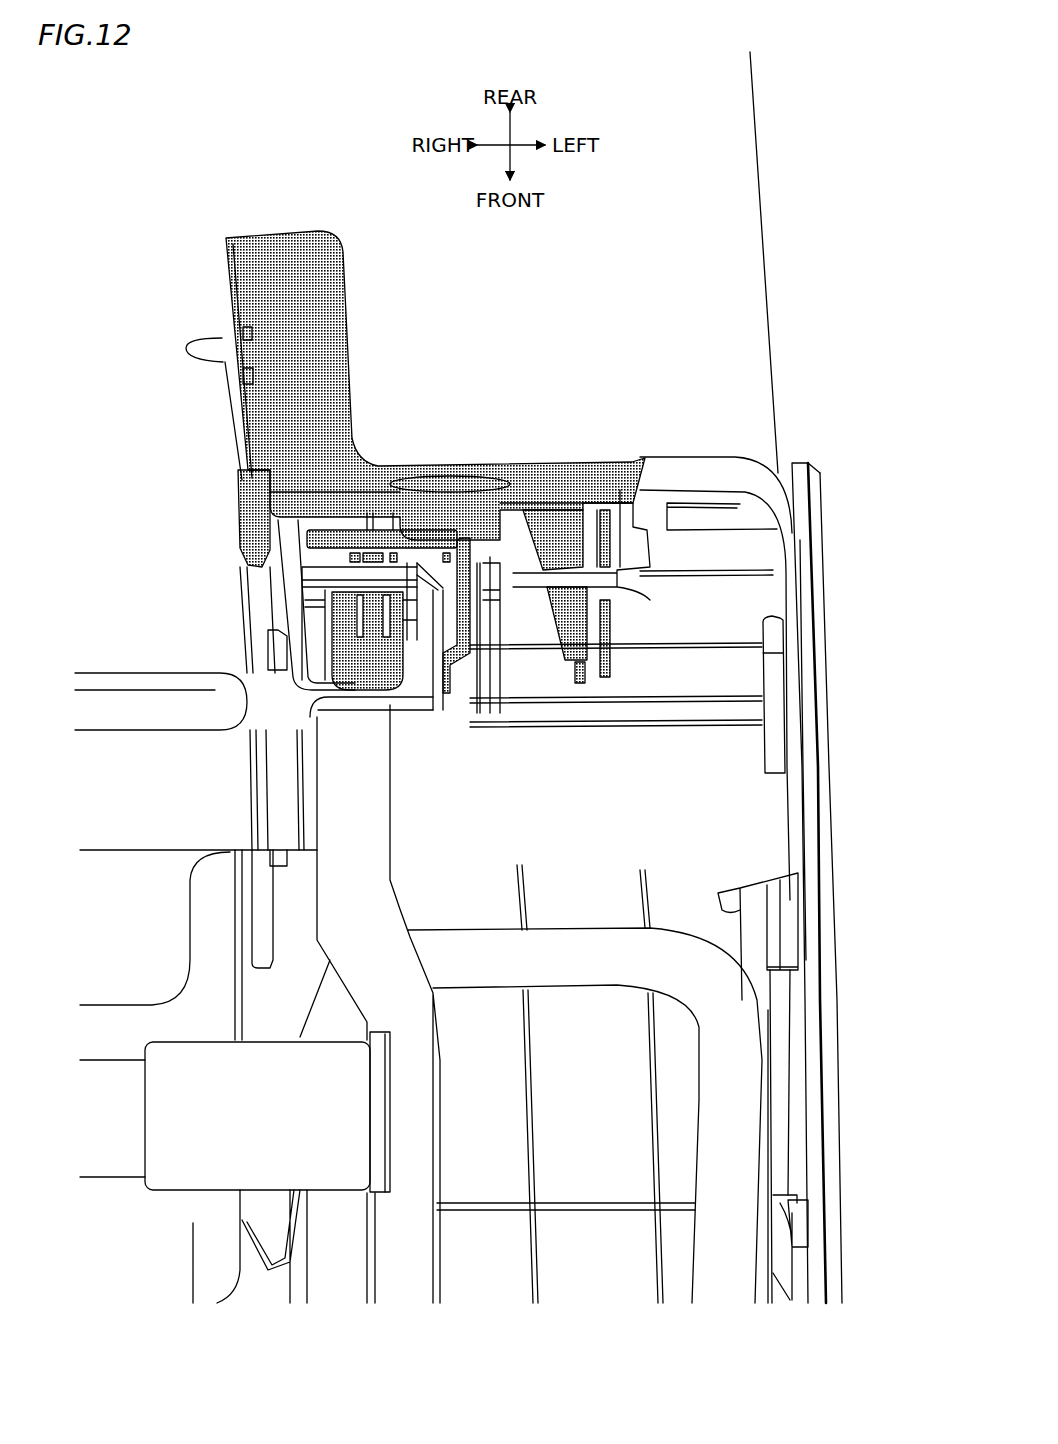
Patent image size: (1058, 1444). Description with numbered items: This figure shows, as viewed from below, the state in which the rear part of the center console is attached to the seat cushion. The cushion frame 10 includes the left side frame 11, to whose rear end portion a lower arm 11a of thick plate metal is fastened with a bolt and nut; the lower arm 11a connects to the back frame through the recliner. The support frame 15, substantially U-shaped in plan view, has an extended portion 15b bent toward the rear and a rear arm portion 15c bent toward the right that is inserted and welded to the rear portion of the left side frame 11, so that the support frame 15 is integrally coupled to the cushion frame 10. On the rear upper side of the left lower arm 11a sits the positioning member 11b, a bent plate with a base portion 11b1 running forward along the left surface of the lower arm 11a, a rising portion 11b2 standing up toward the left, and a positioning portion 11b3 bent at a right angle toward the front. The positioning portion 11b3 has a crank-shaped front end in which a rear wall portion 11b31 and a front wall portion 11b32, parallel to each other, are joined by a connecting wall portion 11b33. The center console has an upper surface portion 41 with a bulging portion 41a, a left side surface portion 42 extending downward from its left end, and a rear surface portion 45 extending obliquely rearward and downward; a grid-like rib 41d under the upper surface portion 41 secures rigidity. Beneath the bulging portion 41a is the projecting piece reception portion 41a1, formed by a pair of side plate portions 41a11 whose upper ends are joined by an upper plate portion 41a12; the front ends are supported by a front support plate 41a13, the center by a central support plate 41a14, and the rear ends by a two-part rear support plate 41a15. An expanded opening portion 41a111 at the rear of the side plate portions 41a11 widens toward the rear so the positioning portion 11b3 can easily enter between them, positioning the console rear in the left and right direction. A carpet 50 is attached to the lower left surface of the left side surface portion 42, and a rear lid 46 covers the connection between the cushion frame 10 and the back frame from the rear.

The cushion frame 10 is at (385, 988).
The side frame 11 is at (437, 1165).
The lower arm 11a is at (272, 597).
The positioning member 11b is at (366, 548).
The base portion 11b1 is at (275, 458).
The rising portion 11b2 is at (383, 465).
The positioning portion 11b3 is at (503, 617).
The rear wall portion 11b31 is at (460, 520).
The front wall portion 11b32 is at (462, 715).
The connecting wall portion 11b33 is at (460, 700).
The support frame 15 is at (714, 1063).
The extended portion 15b is at (743, 1122).
The rear arm portion 15c is at (570, 927).
The upper surface portion 41 is at (519, 824).
The bulging portion 41a is at (743, 805).
The projecting piece reception portion 41a1 is at (513, 680).
The side plate portions 41a11 is at (338, 630).
The expanded opening portion 41a111 is at (438, 520).
The upper plate portion 41a12 is at (433, 740).
The front support plate 41a13 is at (653, 727).
The central support plate 41a14 is at (687, 640).
The rear support plate 41a15 is at (713, 547).
The grid-like rib 41d is at (525, 1095).
The left side surface portion 42 is at (808, 863).
The rear surface portion 45 is at (690, 473).
The rear lid 46 is at (600, 487).
The carpet 50 is at (840, 1057).